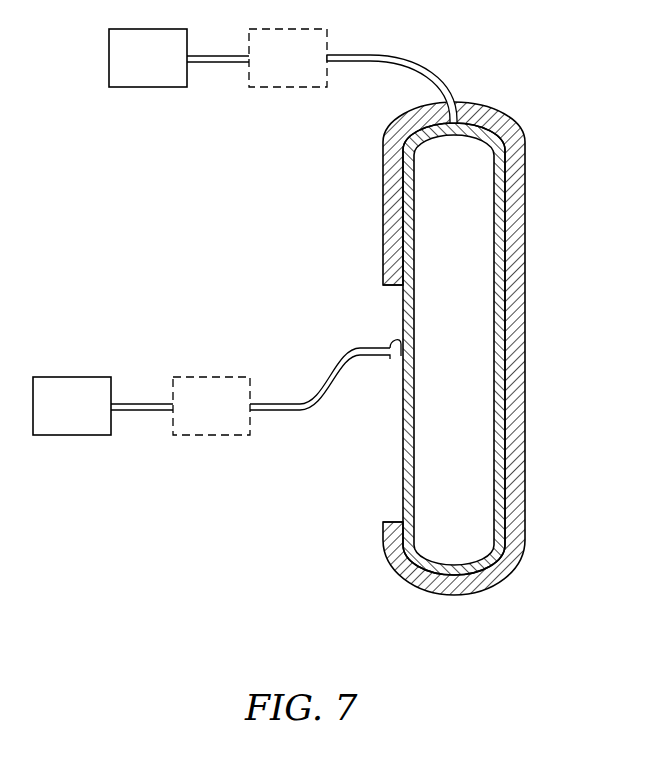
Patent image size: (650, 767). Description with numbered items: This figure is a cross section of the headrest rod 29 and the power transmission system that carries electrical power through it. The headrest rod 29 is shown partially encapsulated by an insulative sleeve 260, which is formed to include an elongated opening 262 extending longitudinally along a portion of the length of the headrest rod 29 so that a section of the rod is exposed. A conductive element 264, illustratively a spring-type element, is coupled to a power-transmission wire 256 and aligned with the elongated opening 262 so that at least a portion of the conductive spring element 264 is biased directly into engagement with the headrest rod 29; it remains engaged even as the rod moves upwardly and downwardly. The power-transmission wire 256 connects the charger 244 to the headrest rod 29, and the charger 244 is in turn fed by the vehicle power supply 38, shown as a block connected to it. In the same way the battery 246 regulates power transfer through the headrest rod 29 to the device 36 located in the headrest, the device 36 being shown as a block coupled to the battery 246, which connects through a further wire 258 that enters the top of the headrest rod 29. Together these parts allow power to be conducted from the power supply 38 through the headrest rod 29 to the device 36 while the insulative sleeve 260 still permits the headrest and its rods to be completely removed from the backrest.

The headrest rod 29 is at (498, 303).
The device 36 is at (148, 88).
The power supply 38 is at (72, 436).
The charger 244 is at (219, 436).
The battery 246 is at (295, 88).
The power-transmission wire 256 is at (323, 403).
The lead wire 258 is at (392, 54).
The insulative sleeve 260 is at (515, 370).
The elongated opening 262 is at (388, 502).
The conductive spring element 264 is at (387, 335).